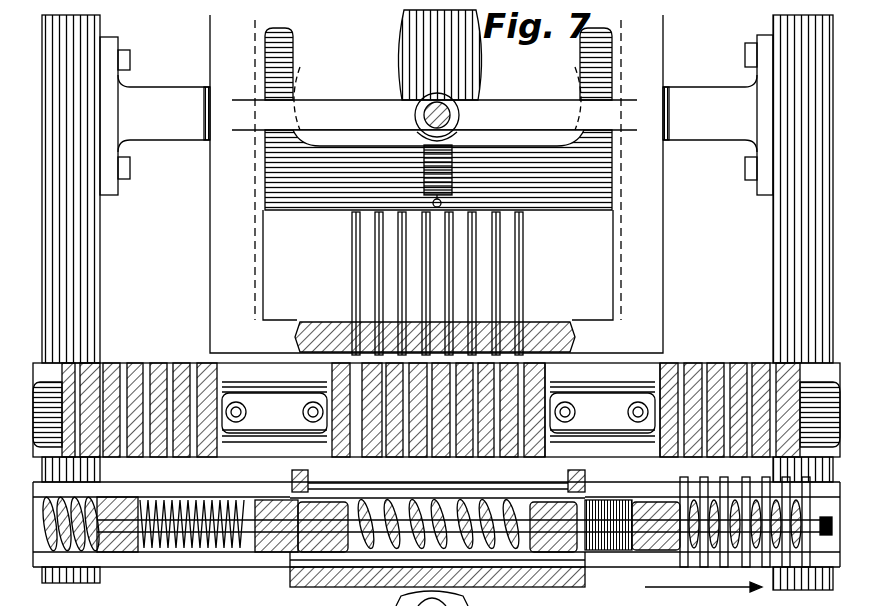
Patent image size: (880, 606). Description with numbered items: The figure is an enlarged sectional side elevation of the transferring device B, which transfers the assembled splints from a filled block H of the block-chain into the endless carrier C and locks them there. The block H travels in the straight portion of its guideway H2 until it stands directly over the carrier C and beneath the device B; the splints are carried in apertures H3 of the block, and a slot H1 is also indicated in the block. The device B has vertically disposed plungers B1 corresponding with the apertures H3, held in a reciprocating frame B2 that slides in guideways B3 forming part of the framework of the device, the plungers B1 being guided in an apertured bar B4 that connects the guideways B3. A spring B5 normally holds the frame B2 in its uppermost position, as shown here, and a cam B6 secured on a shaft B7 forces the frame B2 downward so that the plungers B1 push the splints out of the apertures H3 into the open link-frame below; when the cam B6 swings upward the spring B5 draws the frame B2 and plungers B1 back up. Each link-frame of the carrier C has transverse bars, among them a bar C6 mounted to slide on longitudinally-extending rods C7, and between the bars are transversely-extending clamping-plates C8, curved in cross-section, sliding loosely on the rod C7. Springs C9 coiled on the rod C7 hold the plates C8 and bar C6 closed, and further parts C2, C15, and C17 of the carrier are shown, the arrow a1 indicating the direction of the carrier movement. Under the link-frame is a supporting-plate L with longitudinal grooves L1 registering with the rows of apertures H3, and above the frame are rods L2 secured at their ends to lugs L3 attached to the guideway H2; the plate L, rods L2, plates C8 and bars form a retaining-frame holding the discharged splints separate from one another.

The transferring device B is at (437, 189).
The plungers B1 is at (352, 282).
The reciprocating frame B2 is at (598, 202).
The guideways B3 is at (232, 248).
The apertured bar B4 is at (562, 318).
The spring B5 is at (425, 168).
The cam B6 is at (410, 57).
The shaft B7 is at (452, 116).
The block H is at (168, 345).
The slot H1 is at (438, 412).
The guideway H2 is at (623, 378).
The apertures H3 is at (700, 372).
The carrier C is at (236, 492).
The collar C2 is at (210, 560).
The transverse bar C6 is at (545, 500).
The longitudinally-extending rods C7 is at (527, 478).
The clamping-plates C8 is at (90, 500).
The springs C9 is at (172, 540).
The block C15 is at (660, 545).
The bearing C17 is at (836, 570).
The supporting-plate L is at (355, 580).
The grooves or recesses L1 is at (290, 570).
The longitudinally-extending rods L2 is at (418, 476).
The lugs L3 is at (292, 478).
The direction arrow a1 is at (703, 594).